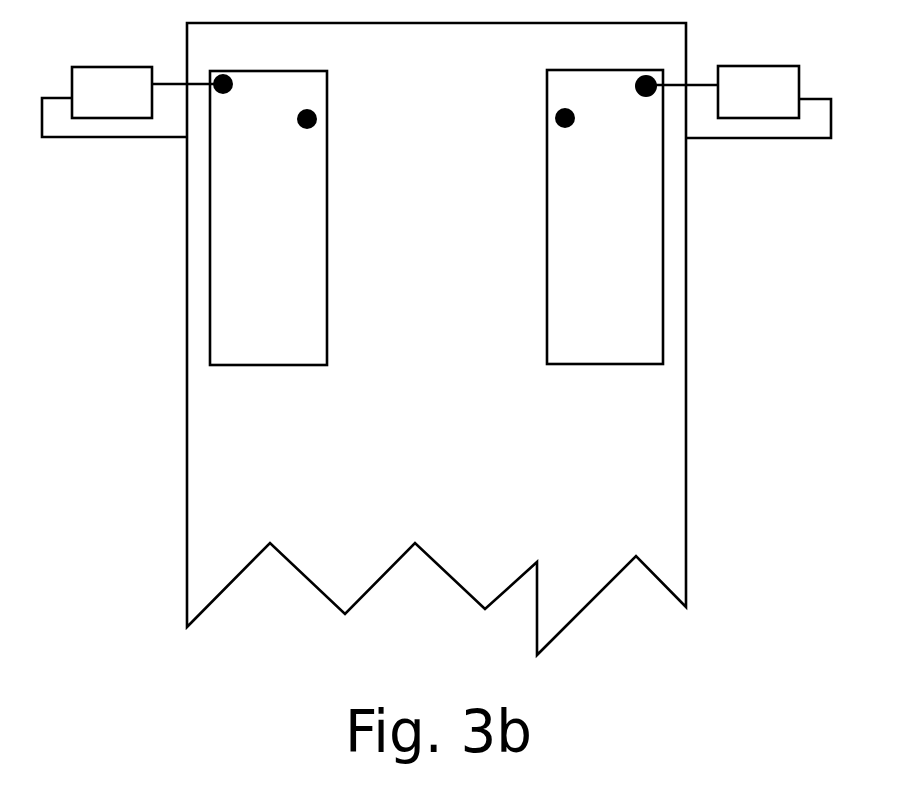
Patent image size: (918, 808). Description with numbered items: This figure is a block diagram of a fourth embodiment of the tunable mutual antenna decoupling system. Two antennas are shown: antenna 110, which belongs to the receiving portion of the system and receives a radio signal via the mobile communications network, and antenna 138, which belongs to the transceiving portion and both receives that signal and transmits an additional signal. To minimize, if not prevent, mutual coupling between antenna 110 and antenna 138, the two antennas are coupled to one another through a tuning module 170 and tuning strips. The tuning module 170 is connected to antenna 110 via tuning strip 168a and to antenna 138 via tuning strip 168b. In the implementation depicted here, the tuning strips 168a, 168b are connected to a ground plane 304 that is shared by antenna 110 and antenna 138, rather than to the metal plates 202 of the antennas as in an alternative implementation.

The ground plane 304 is at (187, 378).
The antenna 110 is at (268, 218).
The antenna 138 is at (605, 217).
The tuning module 170 is at (113, 67).
The tuning strip 168a is at (58, 137).
The tuning strip 168b is at (788, 138).
The metal plate 202 is at (752, 138).